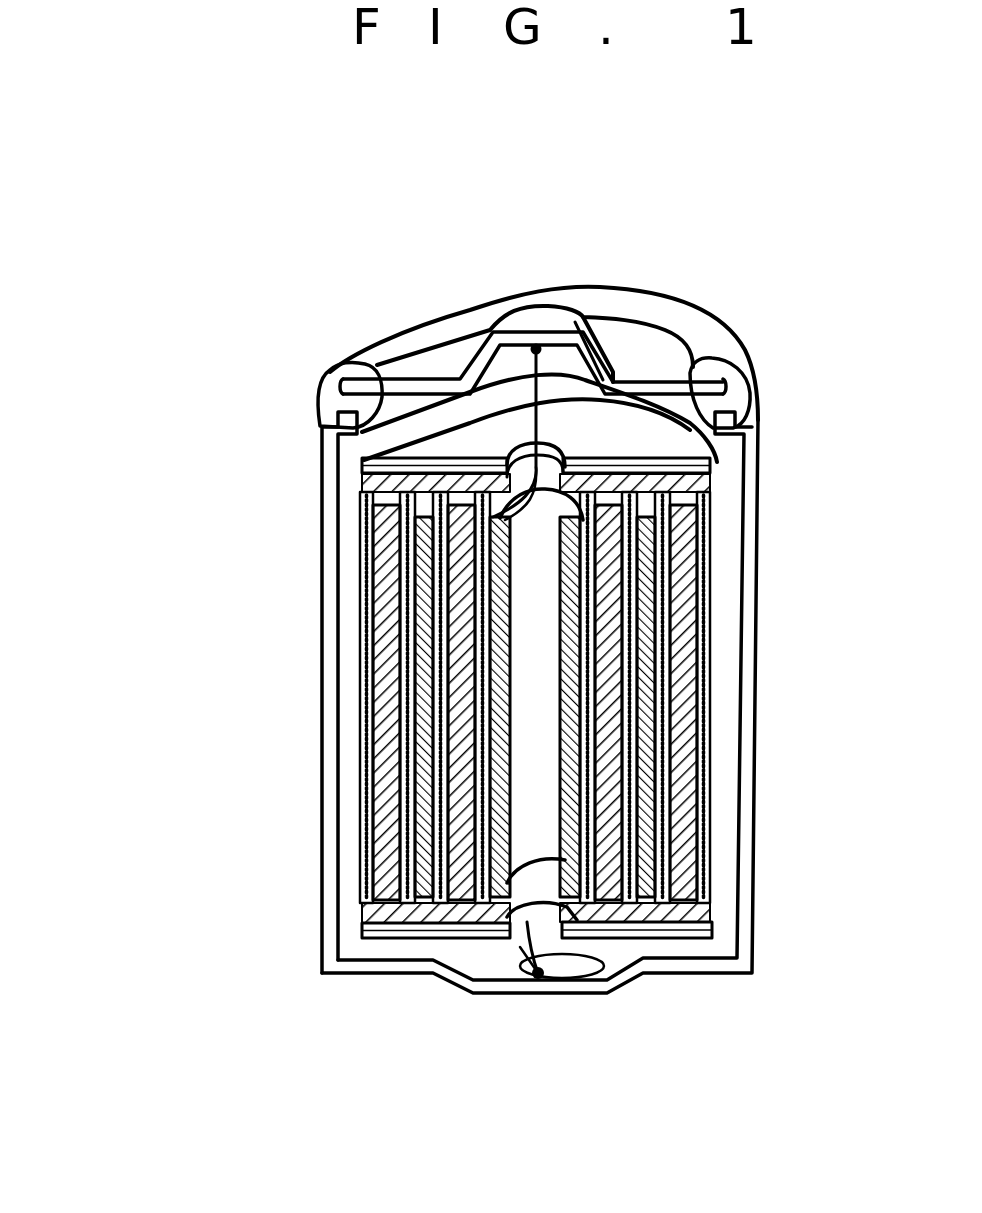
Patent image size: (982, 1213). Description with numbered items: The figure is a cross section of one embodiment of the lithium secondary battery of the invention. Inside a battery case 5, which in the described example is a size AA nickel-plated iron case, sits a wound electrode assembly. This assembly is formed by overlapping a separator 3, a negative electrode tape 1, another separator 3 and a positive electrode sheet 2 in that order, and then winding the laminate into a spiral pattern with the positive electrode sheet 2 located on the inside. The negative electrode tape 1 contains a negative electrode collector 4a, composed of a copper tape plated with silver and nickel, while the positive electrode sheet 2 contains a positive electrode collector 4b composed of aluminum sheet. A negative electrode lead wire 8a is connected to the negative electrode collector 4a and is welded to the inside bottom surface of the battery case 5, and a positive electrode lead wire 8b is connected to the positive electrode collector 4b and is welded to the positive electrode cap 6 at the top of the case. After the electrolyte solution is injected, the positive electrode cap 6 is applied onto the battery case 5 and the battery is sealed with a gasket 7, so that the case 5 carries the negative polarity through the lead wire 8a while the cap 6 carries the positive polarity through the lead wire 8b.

The negative electrode tape 1 is at (397, 890).
The positive electrode sheet 2 is at (503, 895).
The separator 3 is at (465, 898).
The negative electrode collector 4a is at (380, 545).
The positive electrode collector 4b is at (420, 668).
The battery case 5 is at (320, 790).
The positive electrode cap 6 is at (592, 343).
The gasket 7 is at (325, 378).
The negative electrode lead wire 8a is at (550, 945).
The positive electrode lead wire 8b is at (535, 377).